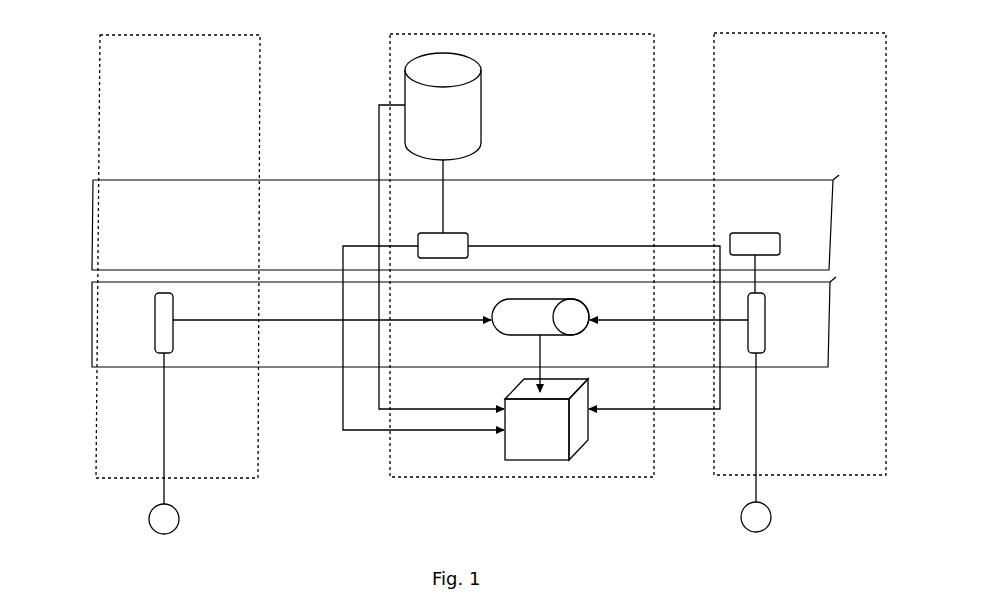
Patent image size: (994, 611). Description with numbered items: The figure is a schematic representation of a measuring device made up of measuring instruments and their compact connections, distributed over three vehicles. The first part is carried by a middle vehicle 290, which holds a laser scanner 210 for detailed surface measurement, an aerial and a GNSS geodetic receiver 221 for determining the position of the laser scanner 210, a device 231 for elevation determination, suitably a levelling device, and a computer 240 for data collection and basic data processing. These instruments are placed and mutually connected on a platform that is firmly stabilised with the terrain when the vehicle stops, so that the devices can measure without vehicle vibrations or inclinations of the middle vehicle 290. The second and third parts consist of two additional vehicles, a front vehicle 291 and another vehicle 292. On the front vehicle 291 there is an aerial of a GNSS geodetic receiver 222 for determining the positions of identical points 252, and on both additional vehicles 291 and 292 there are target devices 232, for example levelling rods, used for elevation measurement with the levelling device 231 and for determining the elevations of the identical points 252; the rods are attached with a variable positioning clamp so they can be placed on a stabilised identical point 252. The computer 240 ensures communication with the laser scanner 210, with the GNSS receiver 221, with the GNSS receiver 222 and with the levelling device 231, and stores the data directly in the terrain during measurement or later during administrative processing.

The laser scanner 210 is at (469, 95).
The GNSS geodetic receiver 221 is at (456, 247).
The GNSS geodetic receiver 222 is at (755, 237).
The device for elevation determination 231 is at (574, 316).
The target devices 232 is at (158, 321).
The computer 240 is at (576, 438).
The identical point 252 is at (160, 519).
The middle vehicle 290 is at (396, 54).
The front vehicle 291 is at (727, 55).
The additional vehicle 292 is at (114, 65).